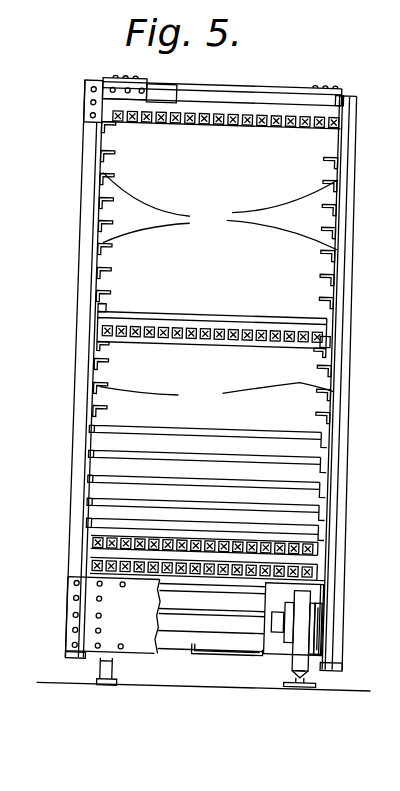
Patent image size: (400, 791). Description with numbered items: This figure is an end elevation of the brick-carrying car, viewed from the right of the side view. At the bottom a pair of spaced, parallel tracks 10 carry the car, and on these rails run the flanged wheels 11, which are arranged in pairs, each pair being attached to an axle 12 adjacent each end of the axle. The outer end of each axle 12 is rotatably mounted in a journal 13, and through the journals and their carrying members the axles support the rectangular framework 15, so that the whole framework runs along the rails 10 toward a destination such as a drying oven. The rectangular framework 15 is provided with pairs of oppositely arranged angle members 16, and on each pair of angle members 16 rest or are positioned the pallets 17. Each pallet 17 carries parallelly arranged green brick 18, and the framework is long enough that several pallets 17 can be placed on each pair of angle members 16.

The tracks 10 is at (90, 672).
The flanged wheels 11 is at (290, 663).
The axle 12 is at (177, 623).
The journal 13 is at (317, 623).
The rectangular framework 15 is at (78, 392).
The angle members 16 is at (218, 290).
The pallets 17 is at (187, 127).
The green brick 18 is at (257, 115).